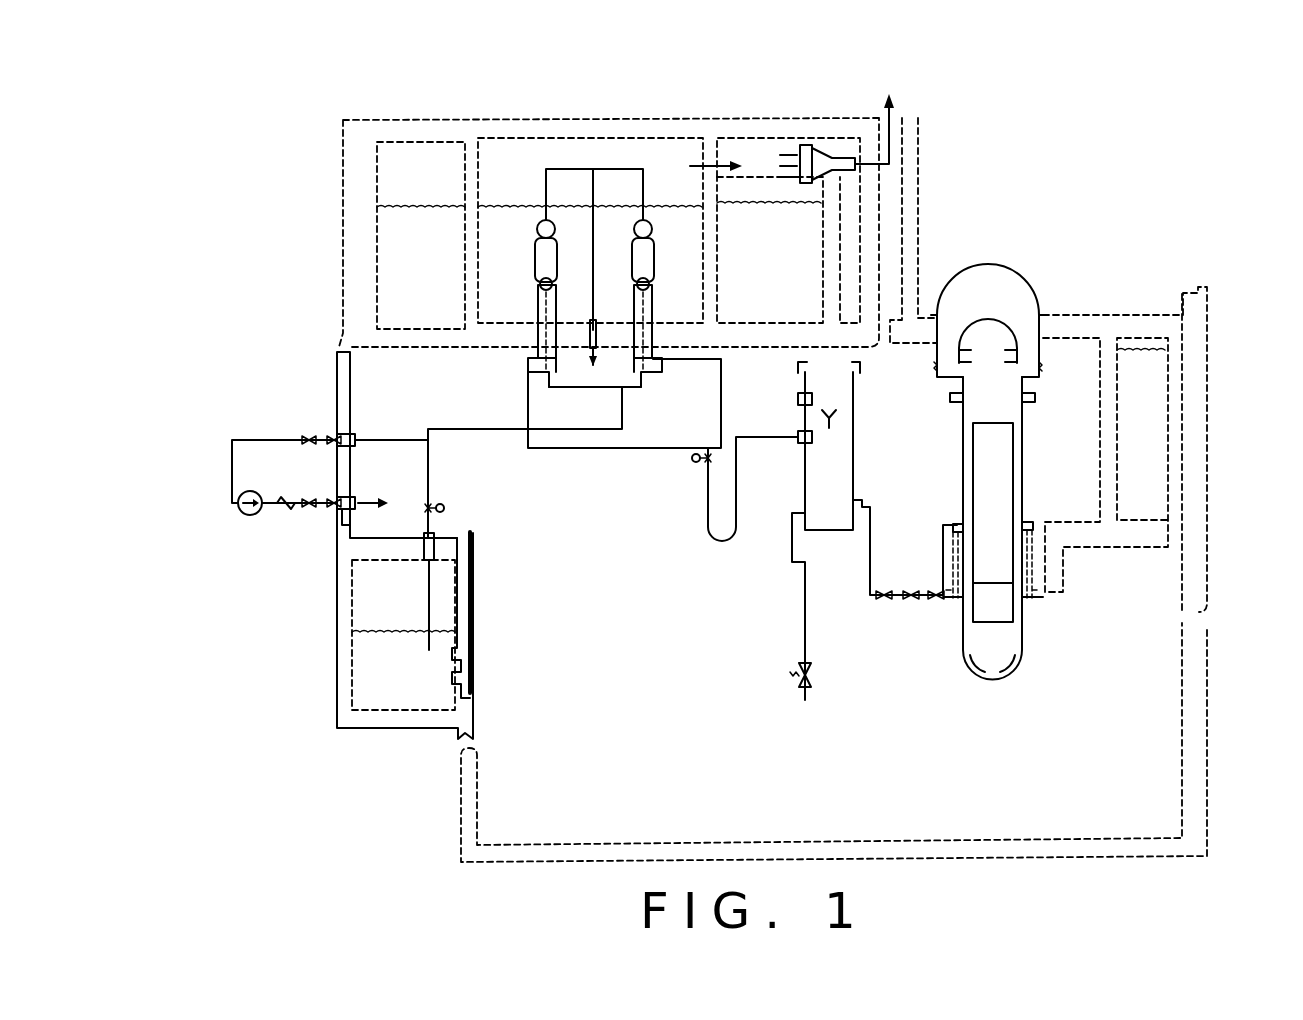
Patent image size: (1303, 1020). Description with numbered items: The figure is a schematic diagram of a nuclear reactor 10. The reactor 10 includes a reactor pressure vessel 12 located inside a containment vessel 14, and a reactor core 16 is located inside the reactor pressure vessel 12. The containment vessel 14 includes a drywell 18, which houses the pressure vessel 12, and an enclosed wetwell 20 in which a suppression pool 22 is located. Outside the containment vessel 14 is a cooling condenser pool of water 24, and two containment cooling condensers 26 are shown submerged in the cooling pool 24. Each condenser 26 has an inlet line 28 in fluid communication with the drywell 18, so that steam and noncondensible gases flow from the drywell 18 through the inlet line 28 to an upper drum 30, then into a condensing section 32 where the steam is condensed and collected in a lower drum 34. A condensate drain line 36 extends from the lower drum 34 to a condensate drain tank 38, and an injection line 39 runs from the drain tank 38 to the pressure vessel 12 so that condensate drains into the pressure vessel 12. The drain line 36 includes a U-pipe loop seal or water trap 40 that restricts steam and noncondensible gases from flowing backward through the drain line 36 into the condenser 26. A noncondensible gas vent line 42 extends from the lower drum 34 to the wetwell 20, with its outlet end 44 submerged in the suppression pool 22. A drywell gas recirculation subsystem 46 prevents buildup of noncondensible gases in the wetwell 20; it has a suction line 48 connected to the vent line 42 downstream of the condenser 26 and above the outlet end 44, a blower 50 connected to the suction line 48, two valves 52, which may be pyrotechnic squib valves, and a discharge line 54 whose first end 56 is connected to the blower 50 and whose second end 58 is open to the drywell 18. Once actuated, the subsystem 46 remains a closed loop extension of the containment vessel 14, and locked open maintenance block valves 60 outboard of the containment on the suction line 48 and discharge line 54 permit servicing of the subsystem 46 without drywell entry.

The nuclear reactor 10 is at (1077, 213).
The reactor pressure vessel 12 is at (1023, 450).
The containment vessel 14 is at (1207, 562).
The reactor core 16 is at (998, 605).
The drywell 18 is at (643, 626).
The wetwell 20 is at (401, 604).
The suppression pool 22 is at (411, 690).
The cooling condenser pool of water 24 is at (628, 232).
The containment cooling condenser 26 is at (528, 195).
The inlet line 28 is at (596, 310).
The upper drum 30 is at (652, 229).
The condensing section 32 is at (655, 262).
The lower drum 34 is at (652, 285).
The condensate drain line 36 is at (612, 450).
The condensate drain tank 38 is at (857, 457).
The injection line 39 is at (873, 545).
The U-pipe loop seal 40 is at (722, 556).
The noncondensible gas vent line 42 is at (478, 429).
The outlet end 44 is at (452, 648).
The drywell gas recirculation subsystem 46 is at (247, 408).
The suction line 48 is at (375, 440).
The blower 50 is at (252, 516).
The valve 52 is at (322, 513).
The discharge line 54 is at (282, 507).
The first end 56 is at (278, 500).
The second end 58 is at (378, 488).
The maintenance block valve 60 is at (348, 497).